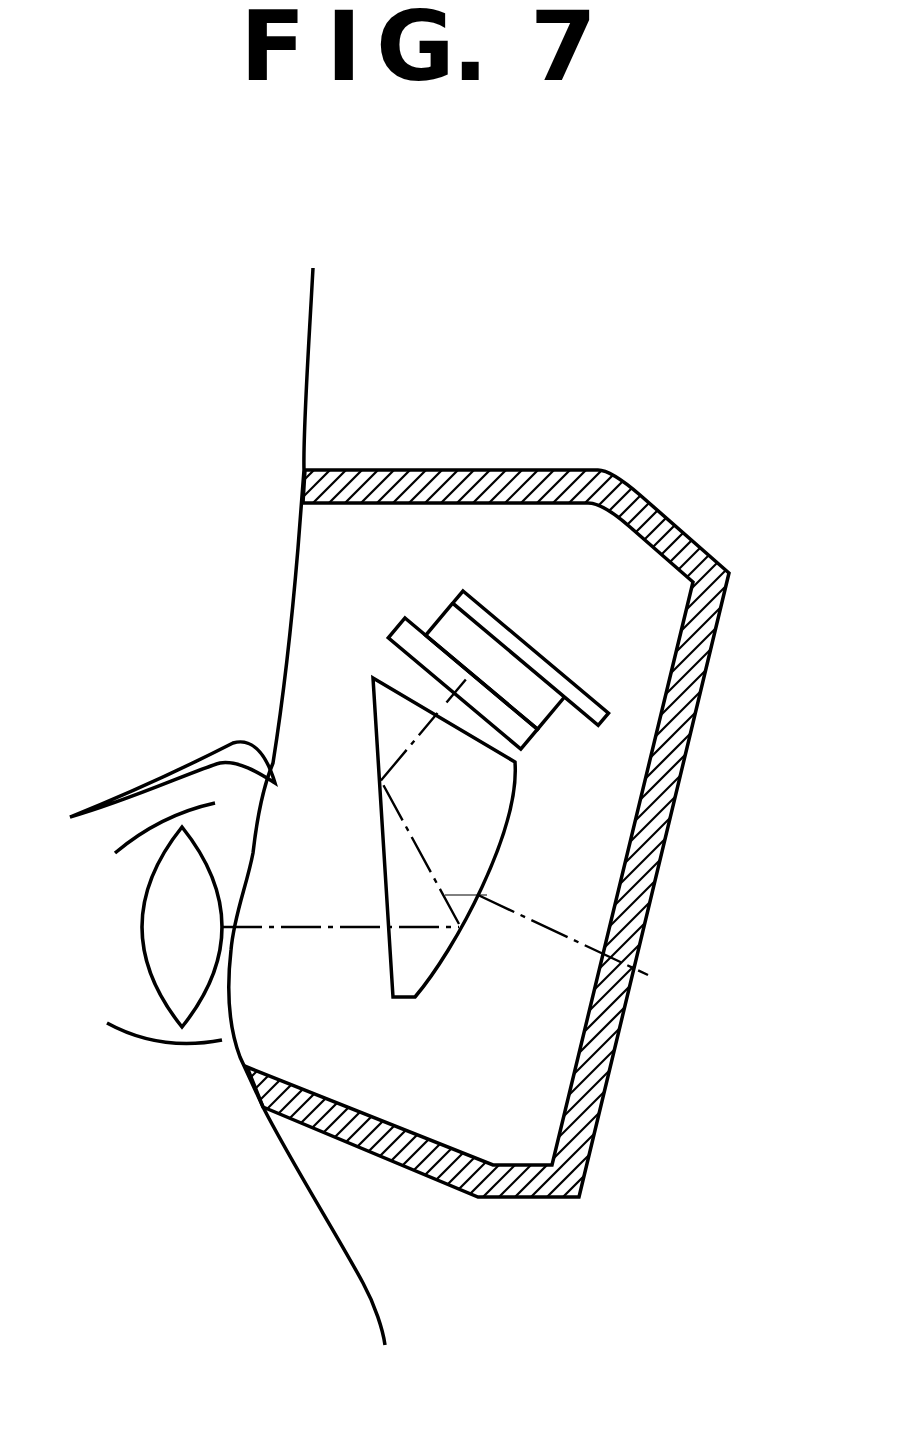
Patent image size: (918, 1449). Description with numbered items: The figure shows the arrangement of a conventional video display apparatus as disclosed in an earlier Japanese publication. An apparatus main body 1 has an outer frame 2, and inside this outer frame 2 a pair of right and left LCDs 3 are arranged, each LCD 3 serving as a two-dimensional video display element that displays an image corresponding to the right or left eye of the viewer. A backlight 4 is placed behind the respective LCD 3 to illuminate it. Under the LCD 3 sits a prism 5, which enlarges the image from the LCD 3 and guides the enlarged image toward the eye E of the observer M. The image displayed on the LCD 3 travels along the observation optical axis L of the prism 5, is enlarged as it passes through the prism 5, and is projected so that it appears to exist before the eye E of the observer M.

The apparatus main body 1 is at (491, 786).
The outer frame 2 is at (438, 490).
The LCD 3 is at (522, 724).
The backlight 4 is at (533, 697).
The prism 5 is at (475, 827).
The observer M is at (285, 327).
The eye E is at (172, 993).
The observation optical axis L is at (655, 980).